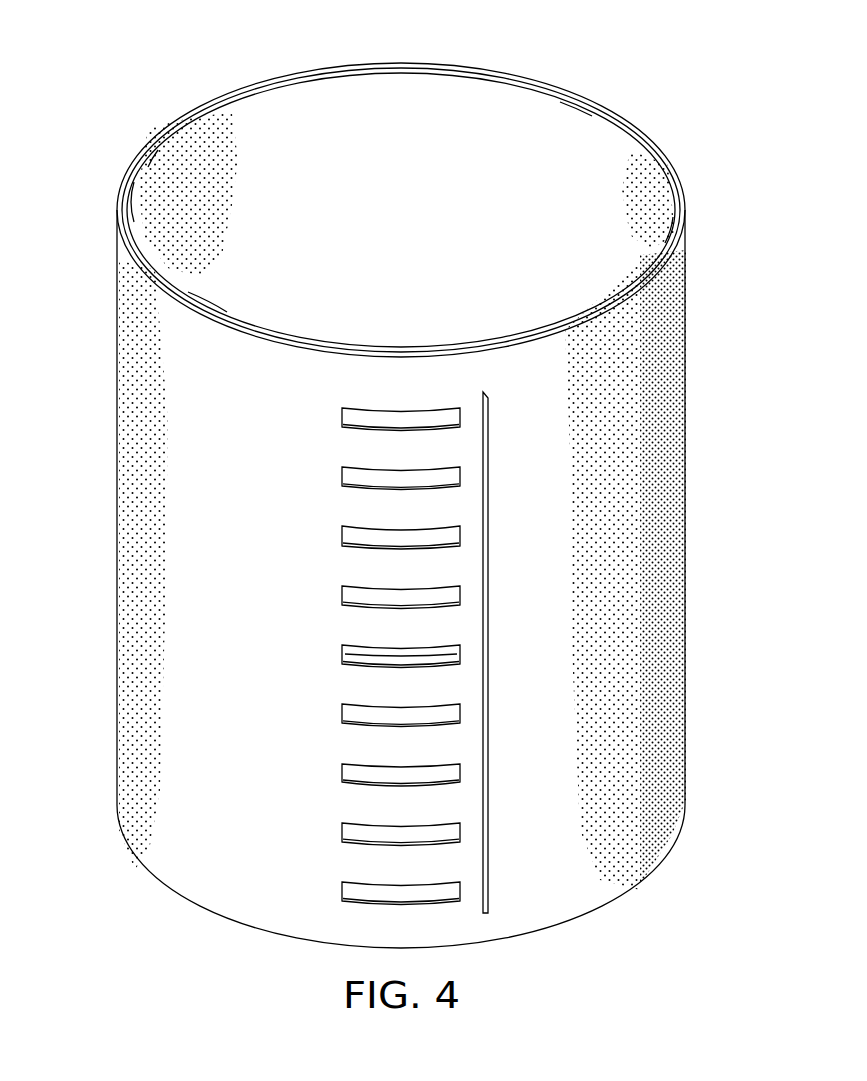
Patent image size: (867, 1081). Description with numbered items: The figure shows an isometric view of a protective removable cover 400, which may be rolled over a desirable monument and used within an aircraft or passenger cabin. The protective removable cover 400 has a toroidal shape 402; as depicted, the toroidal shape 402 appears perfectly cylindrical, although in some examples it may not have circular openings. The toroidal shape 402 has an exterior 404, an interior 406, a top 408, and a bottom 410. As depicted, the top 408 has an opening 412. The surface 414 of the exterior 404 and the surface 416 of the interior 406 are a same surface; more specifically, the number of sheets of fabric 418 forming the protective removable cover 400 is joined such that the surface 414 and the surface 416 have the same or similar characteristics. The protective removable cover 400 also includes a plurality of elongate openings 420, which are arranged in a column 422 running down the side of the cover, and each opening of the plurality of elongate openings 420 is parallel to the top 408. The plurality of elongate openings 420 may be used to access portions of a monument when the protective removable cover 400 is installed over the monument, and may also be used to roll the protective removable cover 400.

The protective removable cover 400 is at (166, 60).
The toroidal shape 402 is at (127, 512).
The exterior 404 is at (692, 538).
The interior 406 is at (268, 121).
The top 408 is at (630, 110).
The bottom 410 is at (250, 929).
The opening 412 is at (530, 110).
The surface 414 is at (250, 648).
The surface 416 is at (421, 227).
The number of sheets of fabric 418 is at (128, 711).
The plurality of elongate openings 420 is at (403, 375).
The column 422 is at (488, 646).